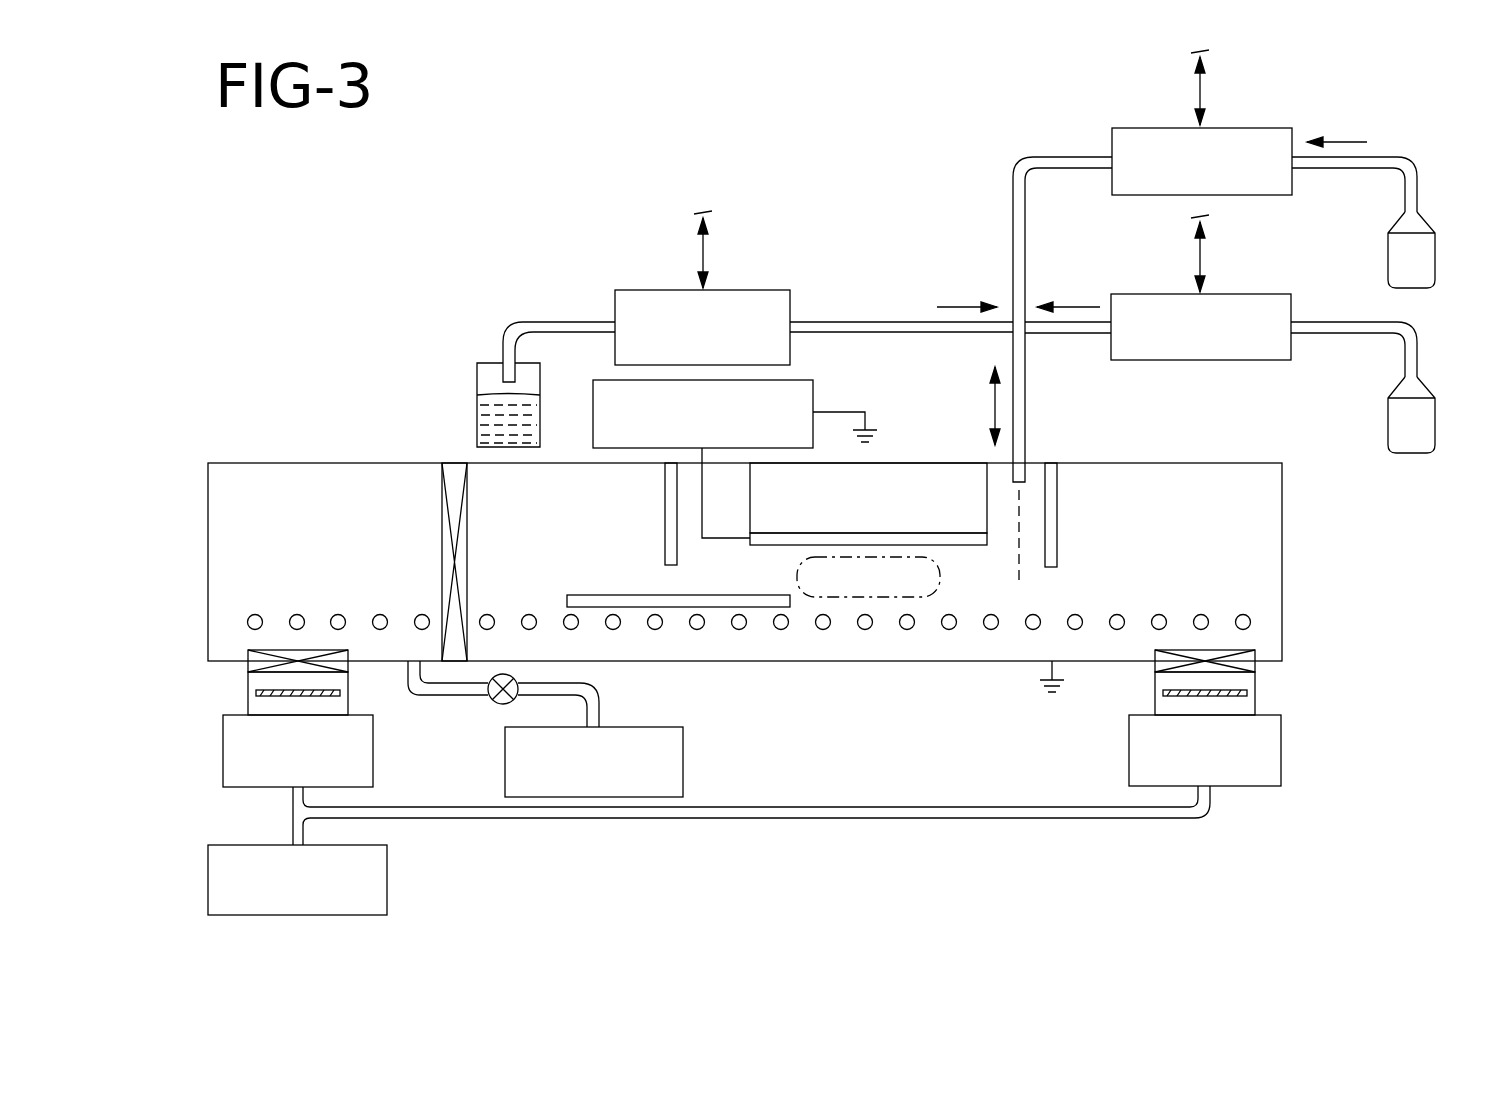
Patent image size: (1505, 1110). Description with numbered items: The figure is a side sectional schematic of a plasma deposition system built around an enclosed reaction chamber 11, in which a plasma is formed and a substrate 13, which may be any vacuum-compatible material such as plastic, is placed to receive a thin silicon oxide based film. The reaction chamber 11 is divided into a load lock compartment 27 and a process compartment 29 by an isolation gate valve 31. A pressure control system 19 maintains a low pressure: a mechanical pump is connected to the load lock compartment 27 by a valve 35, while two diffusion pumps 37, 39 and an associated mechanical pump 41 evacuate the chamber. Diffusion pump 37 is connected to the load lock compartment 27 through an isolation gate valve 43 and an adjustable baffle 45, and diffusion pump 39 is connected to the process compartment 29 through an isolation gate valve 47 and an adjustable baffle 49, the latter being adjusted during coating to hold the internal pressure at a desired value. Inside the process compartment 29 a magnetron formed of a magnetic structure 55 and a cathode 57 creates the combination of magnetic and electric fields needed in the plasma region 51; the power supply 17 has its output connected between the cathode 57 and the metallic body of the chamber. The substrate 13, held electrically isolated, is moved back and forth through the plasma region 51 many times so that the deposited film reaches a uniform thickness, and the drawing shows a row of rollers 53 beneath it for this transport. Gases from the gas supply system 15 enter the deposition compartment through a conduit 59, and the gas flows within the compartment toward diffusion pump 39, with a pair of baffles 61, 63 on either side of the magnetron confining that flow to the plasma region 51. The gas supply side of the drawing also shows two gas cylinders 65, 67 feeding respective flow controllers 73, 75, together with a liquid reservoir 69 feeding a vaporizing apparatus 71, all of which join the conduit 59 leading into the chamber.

The reaction chamber 11 is at (452, 452).
The substrate 13 is at (662, 630).
The gas supply system 15 is at (1136, 396).
The power supply 17 is at (813, 398).
The pressure control system 19 is at (867, 832).
The load lock compartment 27 is at (250, 482).
The process compartment 29 is at (1280, 517).
The isolation gate valve 31 is at (447, 575).
The valve 35 is at (503, 703).
The diffusion pump 37 is at (223, 765).
The diffusion pump 39 is at (1281, 753).
The mechanical pump 41 is at (387, 888).
The isolation gate valve 43 is at (255, 655).
The adjustable baffle 45 is at (255, 690).
The isolation gate valve 47 is at (1255, 655).
The adjustable baffle 49 is at (1255, 690).
The plasma region 51 is at (797, 577).
The rollers 53 is at (822, 630).
The magnetic structure 55 is at (945, 483).
The cathode 57 is at (973, 540).
The conduit 59 is at (1025, 422).
The baffle 61 is at (1057, 512).
The baffle 63 is at (665, 520).
The gas cylinder 65 is at (1436, 420).
The gas cylinder 67 is at (1432, 268).
The liquid reservoir 69 is at (480, 405).
The vaporizing apparatus 71 is at (652, 290).
The flow controller 73 is at (1272, 297).
The flow controller 75 is at (1252, 128).